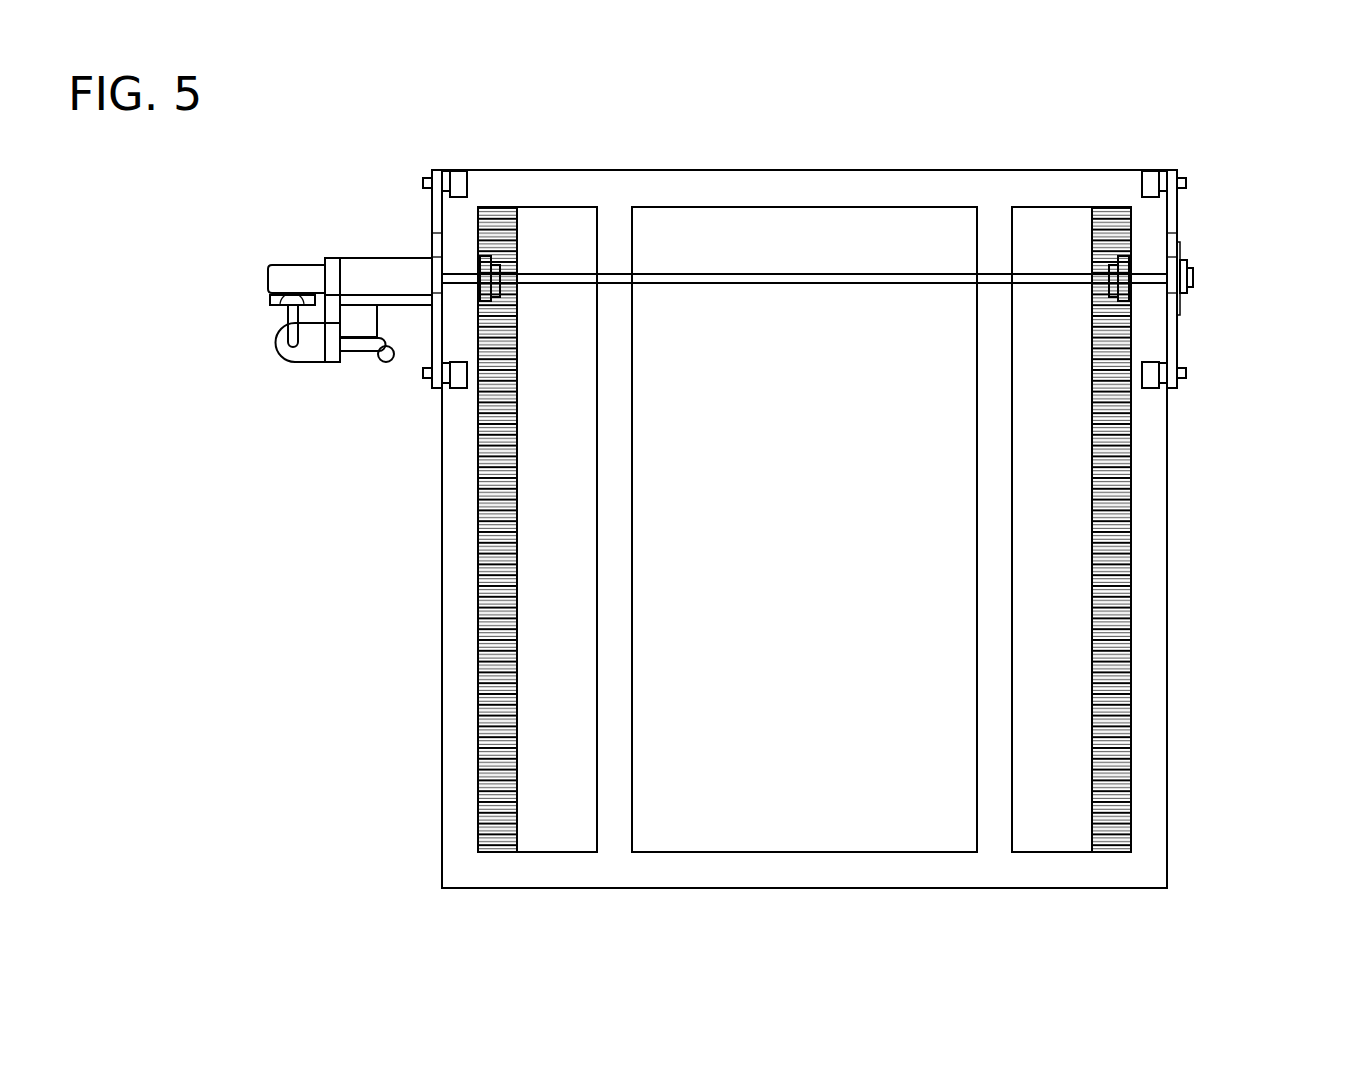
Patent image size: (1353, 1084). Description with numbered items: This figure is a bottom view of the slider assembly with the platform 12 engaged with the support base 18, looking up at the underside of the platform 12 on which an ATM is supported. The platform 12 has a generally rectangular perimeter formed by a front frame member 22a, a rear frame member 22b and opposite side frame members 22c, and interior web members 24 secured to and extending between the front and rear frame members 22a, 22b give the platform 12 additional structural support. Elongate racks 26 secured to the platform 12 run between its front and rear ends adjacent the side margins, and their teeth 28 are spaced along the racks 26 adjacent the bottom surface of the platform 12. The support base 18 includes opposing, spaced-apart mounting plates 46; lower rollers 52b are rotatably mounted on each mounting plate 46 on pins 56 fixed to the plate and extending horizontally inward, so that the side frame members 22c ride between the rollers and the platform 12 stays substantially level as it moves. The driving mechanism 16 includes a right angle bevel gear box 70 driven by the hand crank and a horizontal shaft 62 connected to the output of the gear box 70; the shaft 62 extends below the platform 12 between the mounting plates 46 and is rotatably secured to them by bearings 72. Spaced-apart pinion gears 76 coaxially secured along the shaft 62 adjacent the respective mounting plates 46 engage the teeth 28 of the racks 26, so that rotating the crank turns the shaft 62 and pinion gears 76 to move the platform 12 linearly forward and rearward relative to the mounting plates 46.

The platform 12 is at (756, 160).
The driving mechanism 16 is at (248, 350).
The support base 18 is at (1194, 328).
The front frame member 22a is at (882, 180).
The rear frame member 22b is at (784, 890).
The side frame member 22c is at (458, 817).
The interior web member 24 is at (622, 657).
The rack 26 is at (477, 703).
The teeth 28 is at (495, 623).
The mounting plate 46 is at (436, 213).
The lower roller 52b is at (456, 174).
The pin 56 is at (427, 183).
The shaft 62 is at (803, 286).
The right angle bevel gear box 70 is at (287, 272).
The bearing 72 is at (1189, 276).
The pinion gear 76 is at (492, 258).